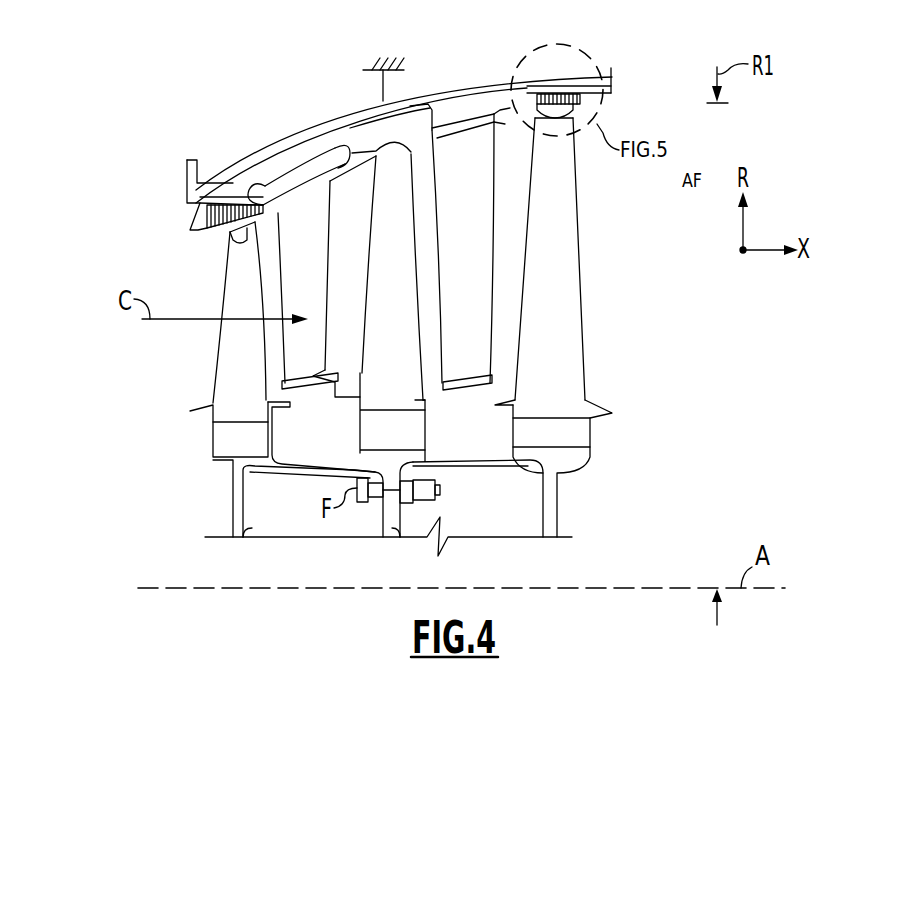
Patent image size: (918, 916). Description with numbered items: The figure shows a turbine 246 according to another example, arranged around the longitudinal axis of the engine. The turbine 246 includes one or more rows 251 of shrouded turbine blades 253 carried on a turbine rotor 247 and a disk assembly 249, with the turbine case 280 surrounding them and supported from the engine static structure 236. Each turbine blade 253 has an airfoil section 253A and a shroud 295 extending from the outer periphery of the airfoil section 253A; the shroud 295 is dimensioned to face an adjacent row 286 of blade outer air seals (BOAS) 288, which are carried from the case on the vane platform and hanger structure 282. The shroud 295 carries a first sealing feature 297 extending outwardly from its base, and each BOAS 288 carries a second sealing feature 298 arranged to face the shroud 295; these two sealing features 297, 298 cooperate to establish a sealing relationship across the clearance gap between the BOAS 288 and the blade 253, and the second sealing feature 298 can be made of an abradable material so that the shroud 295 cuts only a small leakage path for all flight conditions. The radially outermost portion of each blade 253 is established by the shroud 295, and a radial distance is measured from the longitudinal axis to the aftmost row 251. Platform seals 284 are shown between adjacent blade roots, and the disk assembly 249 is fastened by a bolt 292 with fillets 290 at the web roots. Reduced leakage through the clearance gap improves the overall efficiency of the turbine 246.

The turbine 246 is at (126, 72).
The engine static structure 236 is at (383, 56).
The turbine case 280 is at (447, 82).
The row of BOAS 286 is at (356, 95).
The BOAS 288 is at (222, 200).
The vane platform / shroud 282 is at (284, 128).
The shroud 295 is at (355, 145).
The first sealing feature 297 is at (518, 88).
The second sealing feature 298 is at (584, 98).
The turbine rotor 247 is at (705, 140).
The row of turbine blades 251 is at (196, 300).
The turbine blade 253 is at (228, 376).
The airfoil section 253A is at (608, 229).
The platform seals 284 is at (317, 363).
The disk assembly 249 is at (220, 510).
The bolt 292 is at (312, 470).
The disk web fillets 290 is at (252, 530).